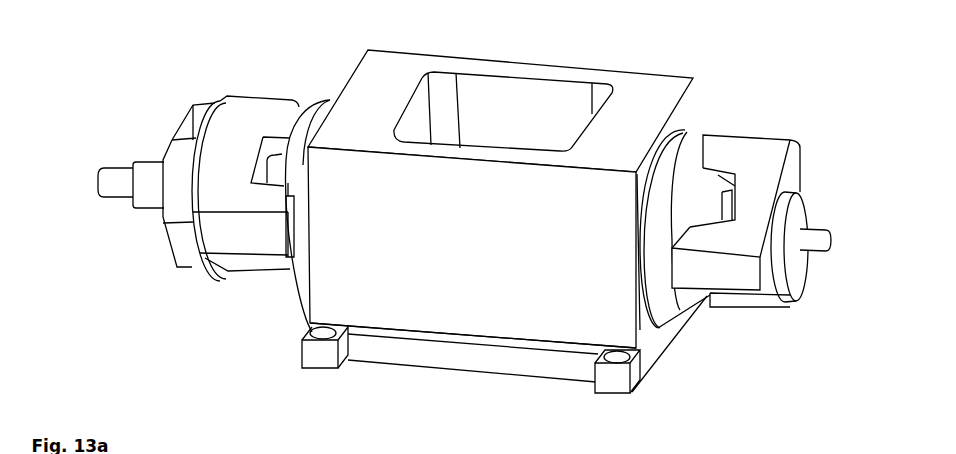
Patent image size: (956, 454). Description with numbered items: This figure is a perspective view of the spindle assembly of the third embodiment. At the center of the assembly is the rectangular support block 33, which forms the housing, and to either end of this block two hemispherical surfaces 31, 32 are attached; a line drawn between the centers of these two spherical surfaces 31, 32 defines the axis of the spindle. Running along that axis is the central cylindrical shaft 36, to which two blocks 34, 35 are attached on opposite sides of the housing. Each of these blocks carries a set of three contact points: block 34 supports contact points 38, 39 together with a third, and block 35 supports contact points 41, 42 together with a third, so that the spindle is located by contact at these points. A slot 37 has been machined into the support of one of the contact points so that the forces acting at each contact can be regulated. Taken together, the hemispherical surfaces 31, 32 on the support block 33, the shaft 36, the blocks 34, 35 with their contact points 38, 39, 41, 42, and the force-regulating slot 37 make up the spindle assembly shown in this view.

The hemispherical surface 31 is at (298, 257).
The hemispherical surface 32 is at (667, 303).
The rectangular support block 33 is at (636, 87).
The block 34 is at (742, 287).
The block 35 is at (212, 236).
The central cylindrical shaft 36 is at (143, 195).
The slot 37 is at (788, 302).
The contact point 38 is at (672, 240).
The contact point 39 is at (704, 167).
The contact point 41 is at (300, 125).
The contact point 42 is at (285, 231).